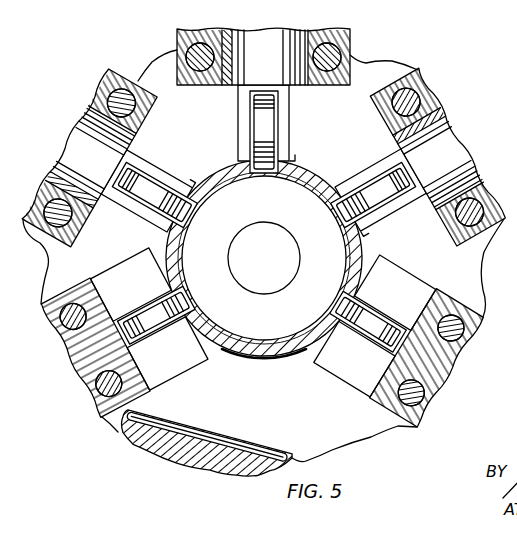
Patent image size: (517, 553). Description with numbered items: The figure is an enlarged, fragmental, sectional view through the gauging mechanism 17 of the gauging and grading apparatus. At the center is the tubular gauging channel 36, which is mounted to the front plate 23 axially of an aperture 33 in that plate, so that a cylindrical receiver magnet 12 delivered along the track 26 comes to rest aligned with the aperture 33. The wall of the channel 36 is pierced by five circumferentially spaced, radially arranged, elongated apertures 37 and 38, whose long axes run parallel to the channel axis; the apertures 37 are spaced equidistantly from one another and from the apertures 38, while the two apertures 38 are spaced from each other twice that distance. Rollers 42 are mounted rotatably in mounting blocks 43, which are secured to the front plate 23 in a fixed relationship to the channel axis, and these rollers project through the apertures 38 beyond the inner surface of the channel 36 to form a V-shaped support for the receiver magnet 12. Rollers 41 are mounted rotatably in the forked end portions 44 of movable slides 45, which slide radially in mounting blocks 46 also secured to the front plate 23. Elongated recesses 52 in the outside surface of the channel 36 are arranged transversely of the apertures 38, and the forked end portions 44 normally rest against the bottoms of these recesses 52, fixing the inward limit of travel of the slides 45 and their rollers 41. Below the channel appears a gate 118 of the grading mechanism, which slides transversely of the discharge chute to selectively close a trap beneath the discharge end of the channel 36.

The receiver magnet 12 is at (232, 182).
The gauging mechanism 17 is at (464, 58).
The front plate 23 is at (383, 70).
The track 26 is at (256, 348).
The aperture 33 is at (223, 350).
The tubular gauging channel 36 is at (302, 360).
The elongated aperture 37 is at (190, 198).
The elongated aperture 38 is at (180, 287).
The roller 41 is at (254, 128).
The roller 42 is at (137, 315).
The mounting block 43 is at (86, 276).
The forked end portion 44 is at (288, 118).
The movable slide 45 is at (233, 86).
The mounting block 46 is at (376, 103).
The elongated recess 52 is at (296, 162).
The gate 118 is at (178, 428).